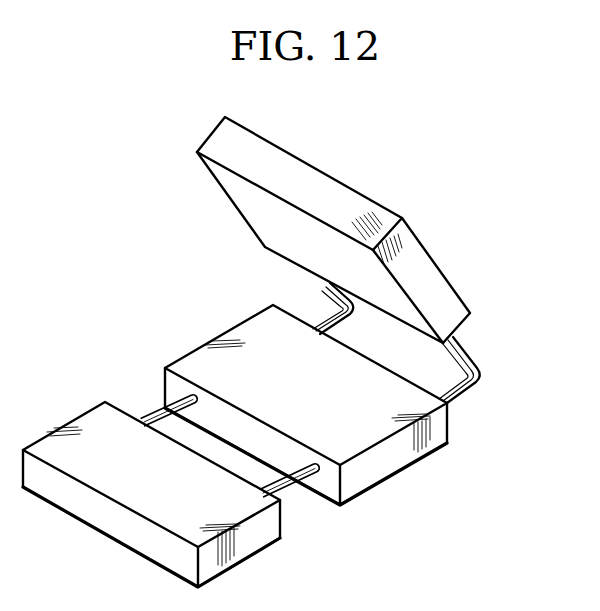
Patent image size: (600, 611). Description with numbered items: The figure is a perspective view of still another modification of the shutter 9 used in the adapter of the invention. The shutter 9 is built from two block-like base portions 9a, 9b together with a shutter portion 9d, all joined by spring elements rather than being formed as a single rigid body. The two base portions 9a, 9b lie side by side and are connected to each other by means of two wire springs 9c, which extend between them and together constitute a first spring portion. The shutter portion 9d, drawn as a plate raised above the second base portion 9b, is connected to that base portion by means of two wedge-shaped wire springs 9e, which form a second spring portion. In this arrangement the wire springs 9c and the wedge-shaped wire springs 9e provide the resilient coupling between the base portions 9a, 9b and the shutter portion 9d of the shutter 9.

The shutter 9 is at (143, 265).
The base portion 9a is at (235, 545).
The base portion 9b is at (397, 452).
The wire springs 9c is at (152, 410).
The shutter portion 9d is at (340, 207).
The wedge-shaped wire springs 9e is at (322, 313).